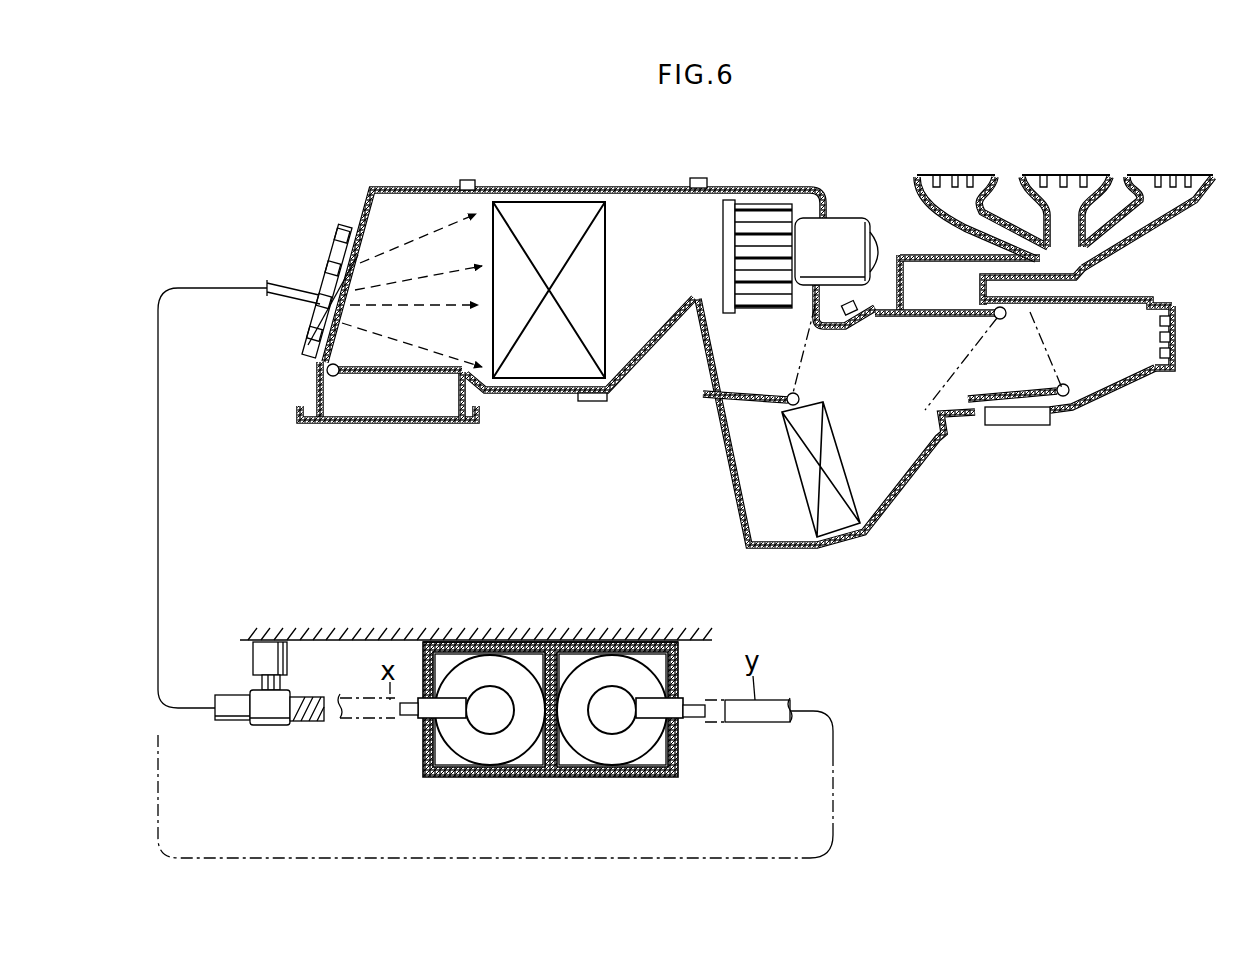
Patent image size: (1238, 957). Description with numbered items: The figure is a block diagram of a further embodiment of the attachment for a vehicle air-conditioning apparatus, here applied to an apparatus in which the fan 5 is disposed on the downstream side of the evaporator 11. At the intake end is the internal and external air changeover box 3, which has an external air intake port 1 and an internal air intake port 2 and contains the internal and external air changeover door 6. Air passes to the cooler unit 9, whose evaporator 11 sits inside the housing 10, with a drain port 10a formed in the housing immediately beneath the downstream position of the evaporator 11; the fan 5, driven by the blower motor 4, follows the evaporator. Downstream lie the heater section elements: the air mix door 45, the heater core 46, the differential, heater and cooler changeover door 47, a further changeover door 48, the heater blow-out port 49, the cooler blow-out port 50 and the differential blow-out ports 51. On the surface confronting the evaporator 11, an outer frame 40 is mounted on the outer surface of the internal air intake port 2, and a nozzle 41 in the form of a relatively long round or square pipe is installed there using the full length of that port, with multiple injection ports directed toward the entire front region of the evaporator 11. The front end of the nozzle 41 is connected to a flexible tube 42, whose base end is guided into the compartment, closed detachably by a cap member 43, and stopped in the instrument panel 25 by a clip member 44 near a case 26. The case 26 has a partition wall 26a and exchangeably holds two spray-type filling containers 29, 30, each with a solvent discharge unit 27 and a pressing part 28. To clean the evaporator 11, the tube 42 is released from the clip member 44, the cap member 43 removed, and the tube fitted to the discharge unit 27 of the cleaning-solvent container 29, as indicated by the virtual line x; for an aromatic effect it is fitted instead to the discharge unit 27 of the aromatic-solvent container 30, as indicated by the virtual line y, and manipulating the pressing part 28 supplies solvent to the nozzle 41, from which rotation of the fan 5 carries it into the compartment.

The external air intake port 1 is at (418, 424).
The internal air intake port 2 is at (362, 253).
The internal and external air changeover box 3 is at (382, 190).
The blower motor 4 is at (830, 218).
The fan 5 is at (760, 205).
The internal and external air changeover door 6 is at (374, 374).
The cooler unit 9 is at (574, 186).
The housing 10 is at (528, 190).
The drain port 10a is at (598, 401).
The evaporator 11 is at (600, 285).
The instrument panel 25 is at (250, 643).
The case 26 is at (533, 781).
The partition wall 26a is at (571, 645).
The solvent discharge unit 27 is at (402, 718).
The pressing part 28 is at (490, 725).
The filling container 29 is at (440, 748).
The filling container 30 is at (648, 760).
The outer frame 40 is at (348, 230).
The nozzle 41 is at (310, 347).
The flexible tube 42 is at (272, 294).
The cap member 43 is at (322, 705).
The clip member 44 is at (262, 727).
The air mix door 45 is at (743, 395).
The heater core 46 is at (790, 482).
The differential, heater and cooler changeover door 47 is at (908, 320).
The mode door 48 is at (1005, 398).
The heater blow-out port 49 is at (1003, 425).
The cooler blow-out port 50 is at (1175, 343).
The differential blow-out port 51 is at (940, 176).